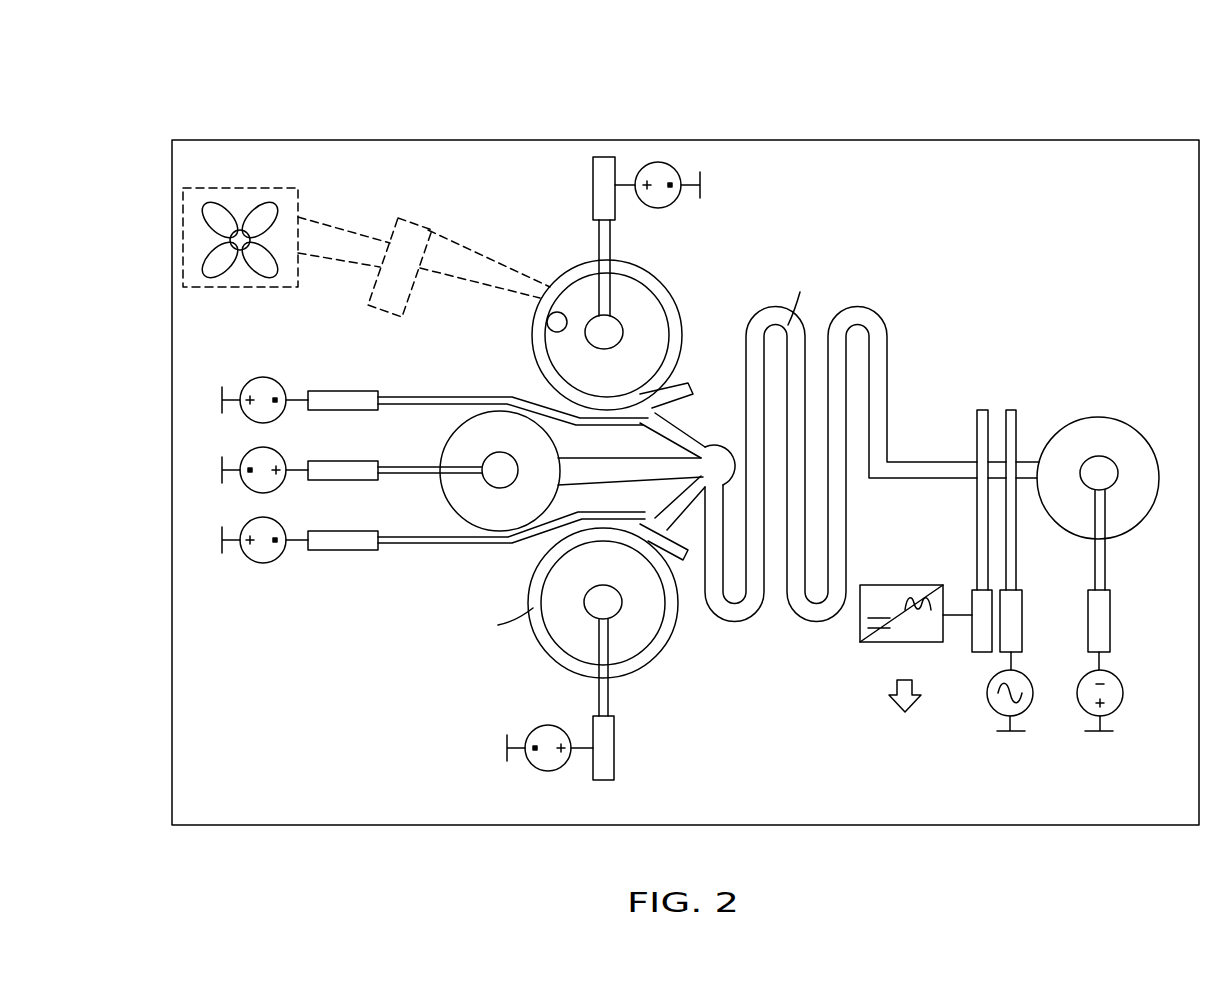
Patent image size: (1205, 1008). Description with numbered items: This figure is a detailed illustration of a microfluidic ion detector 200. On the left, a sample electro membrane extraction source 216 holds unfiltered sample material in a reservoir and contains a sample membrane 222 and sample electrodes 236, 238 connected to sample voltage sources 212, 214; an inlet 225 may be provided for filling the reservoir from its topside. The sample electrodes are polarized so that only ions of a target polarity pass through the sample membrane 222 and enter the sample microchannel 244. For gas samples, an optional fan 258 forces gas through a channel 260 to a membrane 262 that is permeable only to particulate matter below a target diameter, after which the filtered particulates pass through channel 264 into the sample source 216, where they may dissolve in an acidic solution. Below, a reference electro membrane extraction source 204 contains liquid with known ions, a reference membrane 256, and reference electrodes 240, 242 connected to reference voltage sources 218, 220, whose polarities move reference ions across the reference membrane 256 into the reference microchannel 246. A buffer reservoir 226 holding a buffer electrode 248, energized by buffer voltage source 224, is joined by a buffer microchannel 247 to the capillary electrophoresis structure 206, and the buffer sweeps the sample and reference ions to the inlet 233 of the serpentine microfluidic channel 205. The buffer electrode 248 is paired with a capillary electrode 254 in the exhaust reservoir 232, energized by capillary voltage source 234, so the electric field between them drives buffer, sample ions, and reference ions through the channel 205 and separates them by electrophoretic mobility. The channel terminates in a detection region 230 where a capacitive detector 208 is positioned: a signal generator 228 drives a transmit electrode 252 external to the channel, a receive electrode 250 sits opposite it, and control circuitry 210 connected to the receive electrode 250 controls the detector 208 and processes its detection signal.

The ion detector 200 is at (900, 85).
The reference electro membrane extraction source 204 is at (558, 657).
The microfluidic channel 205 is at (818, 613).
The capillary electrophoresis structure 206 is at (802, 260).
The capacitive detector 208 is at (988, 343).
The control circuitry 210 is at (865, 643).
The sample voltage source 212 is at (258, 377).
The sample voltage source 214 is at (668, 204).
The sample electro membrane extraction source 216 is at (550, 284).
The reference voltage source 218 is at (255, 563).
The reference voltage source 220 is at (530, 764).
The sample membrane 222 is at (689, 382).
The buffer voltage source 224 is at (245, 450).
The inlet 225 is at (546, 323).
The buffer reservoir 226 is at (467, 425).
The signal generator 228 is at (1028, 713).
The detection region 230 is at (932, 465).
The exhaust reservoir 232 is at (1133, 423).
The inlet 233 is at (717, 478).
The capillary voltage source 234 is at (1118, 686).
The sample electrode 236 is at (688, 393).
The sample electrode 238 is at (613, 325).
The reference electrode 240 is at (640, 524).
The reference electrode 242 is at (613, 607).
The sample microchannel 244 is at (688, 438).
The reference microchannel 246 is at (660, 510).
The buffer microchannel 247 is at (627, 460).
The buffer electrode 248 is at (497, 483).
The receive electrode 250 is at (977, 422).
The transmit electrode 252 is at (1018, 430).
The capillary electrode 254 is at (1108, 485).
The reference membrane 256 is at (648, 538).
The fan 258 is at (240, 184).
The channel 260 is at (338, 227).
The membrane 262 is at (386, 318).
The channel 264 is at (468, 262).